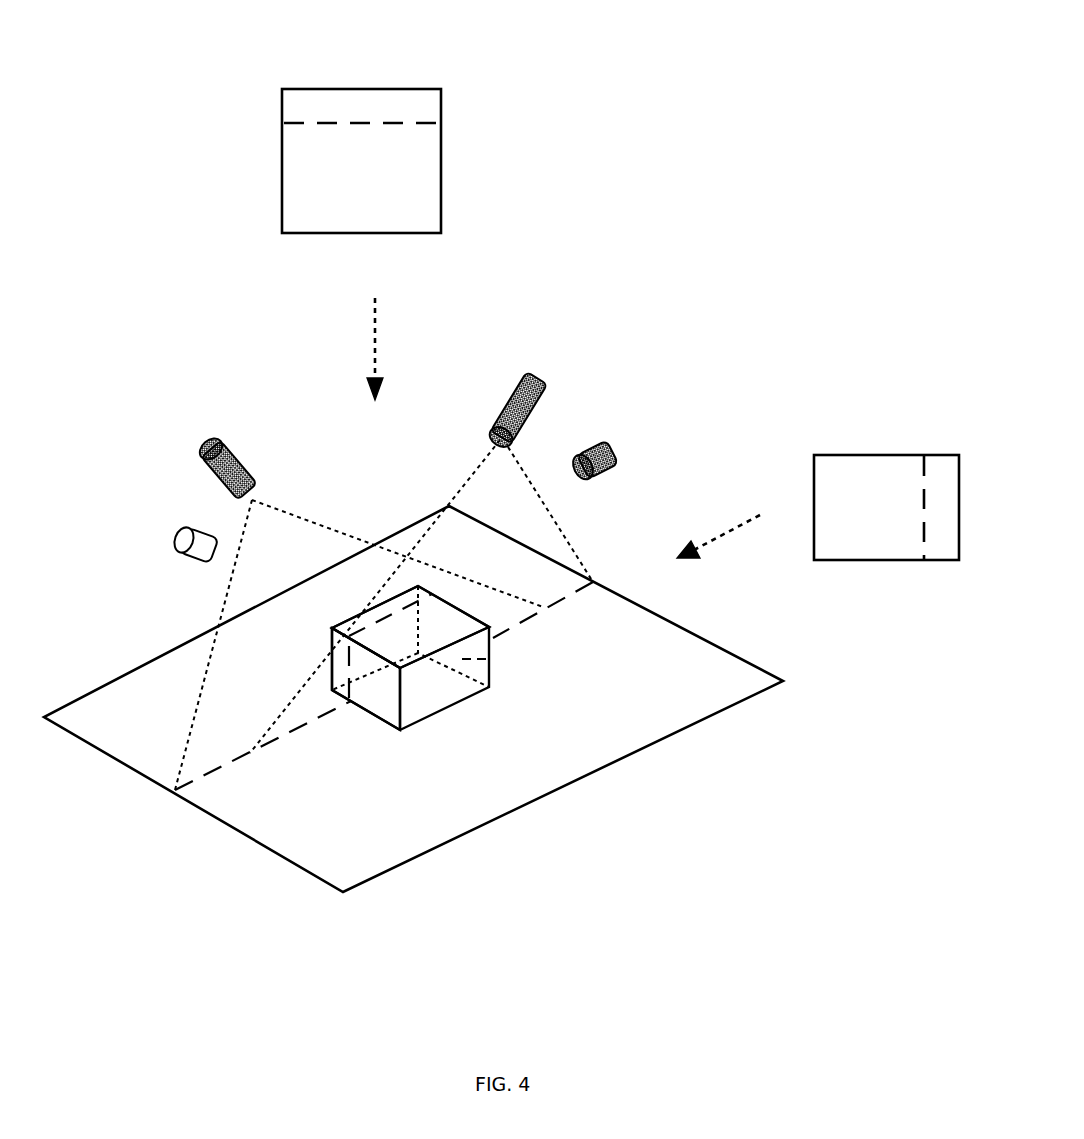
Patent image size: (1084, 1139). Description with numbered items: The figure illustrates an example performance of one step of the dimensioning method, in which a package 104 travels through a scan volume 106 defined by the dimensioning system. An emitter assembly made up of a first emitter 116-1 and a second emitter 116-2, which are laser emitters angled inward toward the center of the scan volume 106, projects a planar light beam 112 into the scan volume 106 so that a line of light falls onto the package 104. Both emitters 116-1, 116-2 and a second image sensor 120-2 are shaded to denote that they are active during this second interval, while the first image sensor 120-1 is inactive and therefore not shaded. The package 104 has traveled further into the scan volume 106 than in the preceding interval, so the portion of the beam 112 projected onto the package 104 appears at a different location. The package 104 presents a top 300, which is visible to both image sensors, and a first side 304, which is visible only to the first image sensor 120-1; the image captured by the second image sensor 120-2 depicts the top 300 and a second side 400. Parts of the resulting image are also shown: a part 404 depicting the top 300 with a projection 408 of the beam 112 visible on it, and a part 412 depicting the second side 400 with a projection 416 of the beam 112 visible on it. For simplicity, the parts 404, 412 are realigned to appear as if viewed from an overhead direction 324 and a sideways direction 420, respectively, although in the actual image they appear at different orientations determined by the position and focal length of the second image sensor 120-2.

The package 104 is at (214, 645).
The scan volume 106 is at (660, 742).
The planar light beam 112 is at (210, 775).
The first emitter 116-1 is at (212, 443).
The second emitter 116-2 is at (538, 372).
The first image sensor 120-1 is at (182, 538).
The second image sensor 120-2 is at (623, 450).
The top 300 is at (410, 627).
The first side 304 is at (366, 679).
The overhead direction 324 is at (395, 349).
The second side 400 is at (490, 658).
The part 404 is at (332, 89).
The projection 408 is at (413, 125).
The part 412 is at (880, 455).
The projection 416 is at (923, 542).
The sideways direction 420 is at (720, 521).